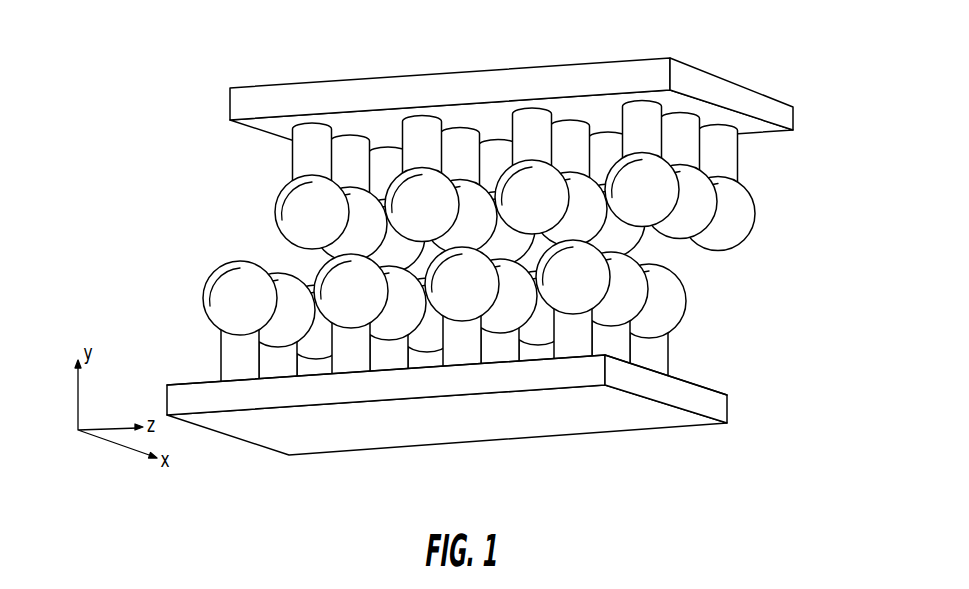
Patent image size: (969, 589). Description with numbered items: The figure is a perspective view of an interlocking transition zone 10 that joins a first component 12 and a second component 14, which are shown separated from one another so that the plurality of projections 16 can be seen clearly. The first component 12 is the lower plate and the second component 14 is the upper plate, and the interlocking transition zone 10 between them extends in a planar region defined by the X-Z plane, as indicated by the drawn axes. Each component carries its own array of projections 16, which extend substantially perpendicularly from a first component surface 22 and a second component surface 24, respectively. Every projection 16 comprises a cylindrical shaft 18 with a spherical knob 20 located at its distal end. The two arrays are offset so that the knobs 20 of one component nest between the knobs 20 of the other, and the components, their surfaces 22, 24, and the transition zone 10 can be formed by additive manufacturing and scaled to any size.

The interlocking transition zone 10 is at (493, 227).
The first component 12 is at (703, 404).
The second component 14 is at (772, 114).
The projections 16 is at (668, 298).
The shaft 18 is at (310, 148).
The knob 20 is at (237, 293).
The first component surface 22 is at (713, 386).
The second component surface 24 is at (762, 133).